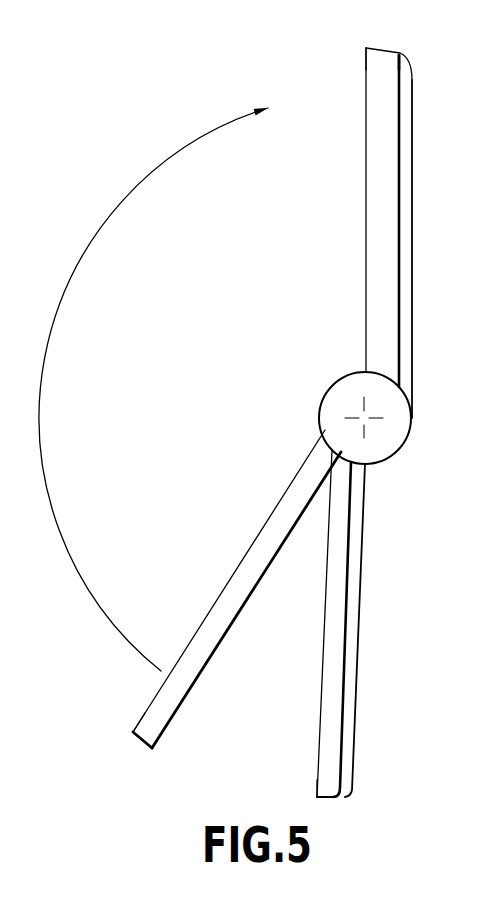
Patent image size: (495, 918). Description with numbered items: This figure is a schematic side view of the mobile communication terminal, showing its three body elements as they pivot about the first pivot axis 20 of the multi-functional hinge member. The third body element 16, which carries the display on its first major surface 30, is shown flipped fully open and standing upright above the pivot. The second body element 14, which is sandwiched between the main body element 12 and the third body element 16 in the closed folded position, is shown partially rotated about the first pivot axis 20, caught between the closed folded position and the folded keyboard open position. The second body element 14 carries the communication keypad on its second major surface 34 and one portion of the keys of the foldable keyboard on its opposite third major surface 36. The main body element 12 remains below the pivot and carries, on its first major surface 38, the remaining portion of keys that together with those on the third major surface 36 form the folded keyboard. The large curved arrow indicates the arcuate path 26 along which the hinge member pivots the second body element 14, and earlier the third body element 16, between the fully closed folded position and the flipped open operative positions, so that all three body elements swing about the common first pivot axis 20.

The main body element 12 is at (337, 794).
The second body element 14 is at (143, 740).
The third body element 16 is at (388, 58).
The first pivot axis 20 is at (365, 416).
The arcuate path 26 is at (73, 270).
The first major surface 30 is at (366, 218).
The second major surface 34 is at (215, 598).
The third major surface 36 is at (213, 655).
The first major surface 38 is at (325, 600).